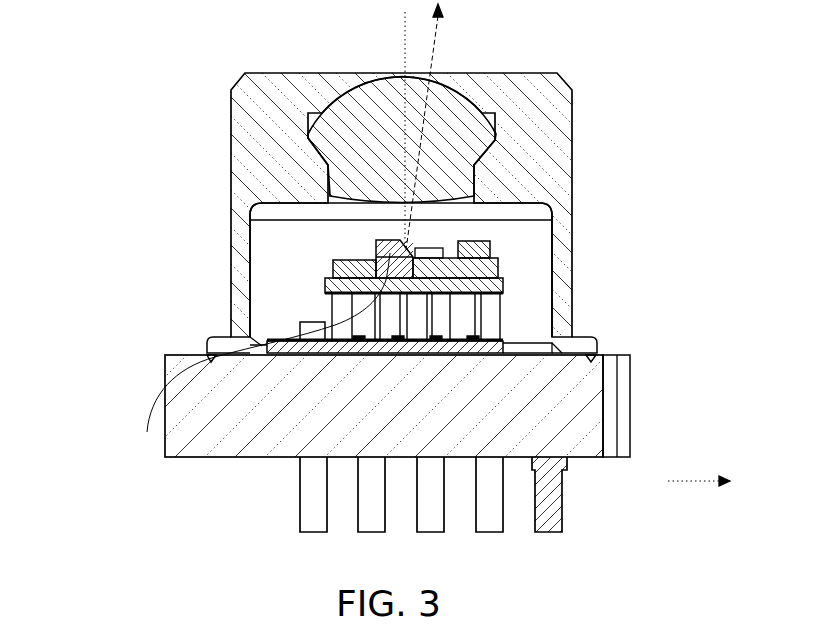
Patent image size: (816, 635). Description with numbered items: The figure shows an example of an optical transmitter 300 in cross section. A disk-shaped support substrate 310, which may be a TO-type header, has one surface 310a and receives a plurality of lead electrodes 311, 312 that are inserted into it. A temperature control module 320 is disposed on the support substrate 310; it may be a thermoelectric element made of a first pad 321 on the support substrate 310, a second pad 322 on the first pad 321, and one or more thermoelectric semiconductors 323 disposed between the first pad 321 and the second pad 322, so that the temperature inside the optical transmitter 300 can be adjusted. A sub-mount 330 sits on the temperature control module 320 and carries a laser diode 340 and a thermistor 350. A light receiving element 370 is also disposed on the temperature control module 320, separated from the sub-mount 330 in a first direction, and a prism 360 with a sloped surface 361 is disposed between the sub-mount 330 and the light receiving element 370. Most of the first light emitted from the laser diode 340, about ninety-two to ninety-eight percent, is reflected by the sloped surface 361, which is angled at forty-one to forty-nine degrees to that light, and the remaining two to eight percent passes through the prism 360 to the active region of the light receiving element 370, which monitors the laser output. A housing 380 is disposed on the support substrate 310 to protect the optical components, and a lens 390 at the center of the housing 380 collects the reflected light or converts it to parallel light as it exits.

The optical transmitter 300 is at (152, 80).
The support substrate 310 is at (623, 428).
The one surface 310a is at (627, 357).
The lead electrode 311 is at (298, 497).
The lead electrode 312 is at (562, 505).
The temperature control module 320 is at (469, 307).
The first pad 321 is at (537, 345).
The second pad 322 is at (503, 290).
The thermoelectric semiconductors 323 is at (488, 315).
The sub-mount 330 is at (500, 268).
The laser diode 340 is at (533, 215).
The thermistor 350 is at (502, 250).
The prism 360 is at (340, 260).
The sloped surface 361 is at (396, 240).
The light receiving element 370 is at (300, 323).
The housing 380 is at (548, 130).
The lens 390 is at (440, 108).